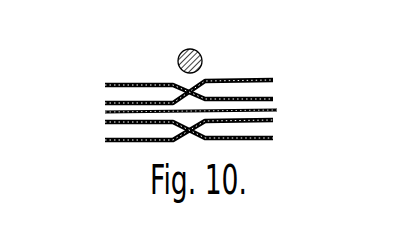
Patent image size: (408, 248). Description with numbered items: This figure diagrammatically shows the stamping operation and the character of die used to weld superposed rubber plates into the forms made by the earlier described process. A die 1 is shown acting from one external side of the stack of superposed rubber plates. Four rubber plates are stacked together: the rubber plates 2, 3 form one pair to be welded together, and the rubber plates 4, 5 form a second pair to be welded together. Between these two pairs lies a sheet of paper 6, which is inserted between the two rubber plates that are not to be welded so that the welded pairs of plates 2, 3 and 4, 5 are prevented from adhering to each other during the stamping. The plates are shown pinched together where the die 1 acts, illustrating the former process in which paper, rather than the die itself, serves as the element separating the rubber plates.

The die 1 is at (201, 56).
The rubber plate 2 is at (273, 79).
The rubber plate 3 is at (273, 99).
The rubber plate 4 is at (273, 120).
The rubber plate 5 is at (273, 138).
The sheet of paper 6 is at (105, 112).